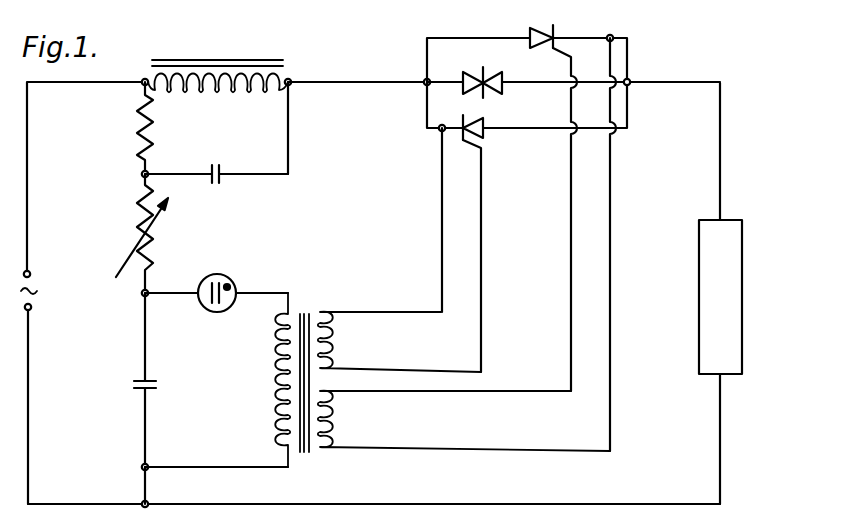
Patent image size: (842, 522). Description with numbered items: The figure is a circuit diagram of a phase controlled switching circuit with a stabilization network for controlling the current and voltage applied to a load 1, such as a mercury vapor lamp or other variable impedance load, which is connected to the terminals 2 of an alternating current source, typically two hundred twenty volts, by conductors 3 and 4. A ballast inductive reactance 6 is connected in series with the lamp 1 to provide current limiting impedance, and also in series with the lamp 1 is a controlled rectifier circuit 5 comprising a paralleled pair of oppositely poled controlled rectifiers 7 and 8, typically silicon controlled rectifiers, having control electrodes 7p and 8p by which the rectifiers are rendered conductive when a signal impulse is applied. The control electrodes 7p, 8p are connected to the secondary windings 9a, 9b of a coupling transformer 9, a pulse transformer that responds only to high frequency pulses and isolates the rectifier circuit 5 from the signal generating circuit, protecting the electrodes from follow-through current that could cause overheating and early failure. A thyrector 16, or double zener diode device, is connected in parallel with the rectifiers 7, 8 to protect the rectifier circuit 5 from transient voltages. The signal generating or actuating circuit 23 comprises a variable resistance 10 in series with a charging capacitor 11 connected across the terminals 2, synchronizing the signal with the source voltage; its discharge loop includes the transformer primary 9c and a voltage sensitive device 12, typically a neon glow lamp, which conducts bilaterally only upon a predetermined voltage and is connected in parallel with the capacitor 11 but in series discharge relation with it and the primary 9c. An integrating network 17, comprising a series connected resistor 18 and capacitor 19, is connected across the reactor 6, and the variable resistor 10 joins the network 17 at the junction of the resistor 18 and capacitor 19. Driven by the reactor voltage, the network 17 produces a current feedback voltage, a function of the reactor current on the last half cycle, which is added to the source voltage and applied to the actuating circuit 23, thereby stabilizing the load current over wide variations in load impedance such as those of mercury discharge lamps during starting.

The load 1 is at (752, 289).
The terminals 2 is at (32, 270).
The conductor 3 is at (78, 84).
The conductor 4 is at (498, 503).
The controlled rectifier circuit 5 is at (572, 238).
The ballast inductive reactance 6 is at (247, 59).
The controlled rectifier 7 is at (528, 43).
The control electrode 7p is at (563, 52).
The controlled rectifier 8 is at (489, 137).
The control electrode 8p is at (471, 144).
The coupling transformer 9 is at (420, 395).
The secondary winding 9a is at (336, 347).
The secondary winding 9b is at (336, 422).
The transformer primary 9c is at (279, 400).
The variable resistance 10 is at (130, 226).
The charging capacitor 11 is at (166, 386).
The voltage sensitive device 12 is at (232, 281).
The thyrector 16 is at (489, 90).
The integrating network 17 is at (297, 129).
The resistor 18 is at (156, 129).
The capacitor 19 is at (220, 188).
The actuating circuit 23 is at (200, 469).